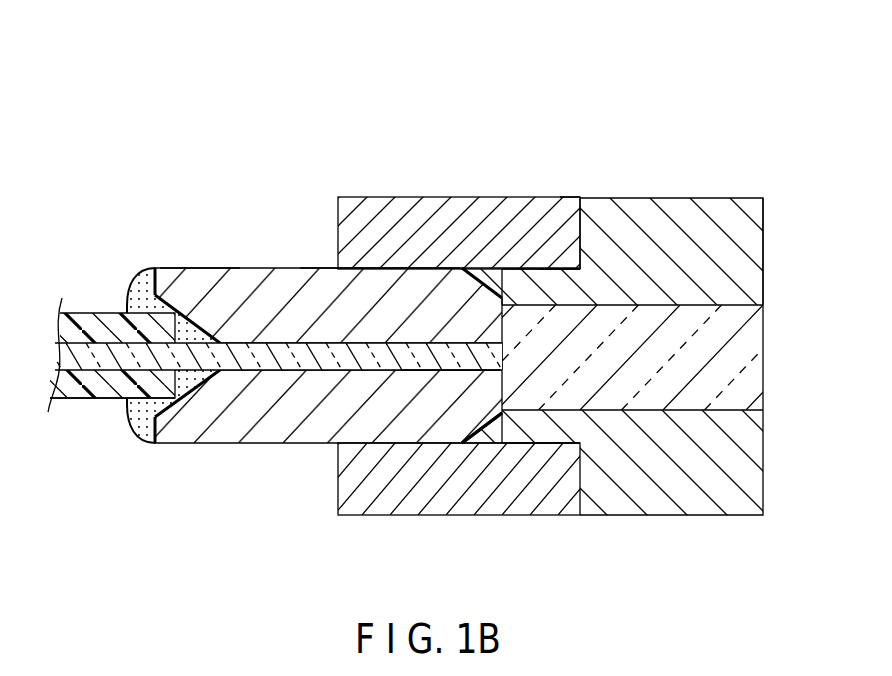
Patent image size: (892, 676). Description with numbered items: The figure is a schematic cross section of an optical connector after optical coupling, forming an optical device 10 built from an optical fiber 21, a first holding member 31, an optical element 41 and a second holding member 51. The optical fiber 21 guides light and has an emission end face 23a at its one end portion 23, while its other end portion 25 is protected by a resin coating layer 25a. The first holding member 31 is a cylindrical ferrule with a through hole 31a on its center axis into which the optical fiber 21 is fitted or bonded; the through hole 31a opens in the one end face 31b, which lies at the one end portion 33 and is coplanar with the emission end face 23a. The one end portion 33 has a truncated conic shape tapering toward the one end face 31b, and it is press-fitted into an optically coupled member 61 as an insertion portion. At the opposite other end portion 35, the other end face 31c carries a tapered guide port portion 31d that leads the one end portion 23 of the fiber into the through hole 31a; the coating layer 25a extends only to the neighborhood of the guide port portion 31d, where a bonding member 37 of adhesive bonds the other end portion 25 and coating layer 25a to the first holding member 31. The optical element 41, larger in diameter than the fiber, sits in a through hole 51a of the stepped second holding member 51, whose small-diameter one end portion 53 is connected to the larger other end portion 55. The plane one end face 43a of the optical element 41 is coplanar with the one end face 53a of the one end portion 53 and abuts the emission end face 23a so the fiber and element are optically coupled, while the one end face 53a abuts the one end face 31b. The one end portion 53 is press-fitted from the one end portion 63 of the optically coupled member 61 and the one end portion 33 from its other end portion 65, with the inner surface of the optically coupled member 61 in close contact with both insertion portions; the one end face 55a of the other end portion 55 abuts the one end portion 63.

The optical device 10 is at (484, 112).
The optical fiber 21 is at (277, 433).
The one end portion 23 is at (430, 372).
The emission end face 23a is at (490, 385).
The other end portion 25 is at (131, 401).
The coating layer 25a is at (88, 400).
The first holding member 31 is at (362, 294).
The through hole 31a is at (255, 330).
The one end face 31b is at (492, 318).
The other end face 31c is at (162, 293).
The guide port portion 31d is at (192, 300).
The one end portion 33 is at (397, 290).
The other end portion 35 is at (218, 300).
The bonding member 37 is at (137, 285).
The optical element 41 is at (632, 436).
The one end face 43a is at (512, 372).
The second holding member 51 is at (642, 311).
The through hole 51a is at (722, 306).
The one end portion 53 is at (590, 268).
The one end face 53a is at (510, 272).
The other end portion 55 is at (750, 207).
The one end face 55a is at (562, 290).
The optically coupled member 61 is at (459, 308).
The one end portion 63 is at (568, 210).
The other end portion 65 is at (352, 208).